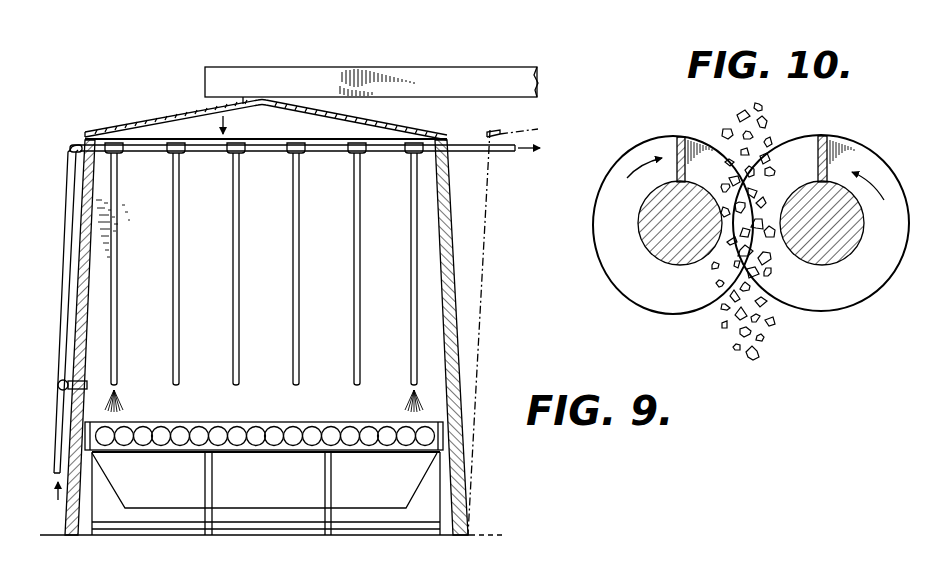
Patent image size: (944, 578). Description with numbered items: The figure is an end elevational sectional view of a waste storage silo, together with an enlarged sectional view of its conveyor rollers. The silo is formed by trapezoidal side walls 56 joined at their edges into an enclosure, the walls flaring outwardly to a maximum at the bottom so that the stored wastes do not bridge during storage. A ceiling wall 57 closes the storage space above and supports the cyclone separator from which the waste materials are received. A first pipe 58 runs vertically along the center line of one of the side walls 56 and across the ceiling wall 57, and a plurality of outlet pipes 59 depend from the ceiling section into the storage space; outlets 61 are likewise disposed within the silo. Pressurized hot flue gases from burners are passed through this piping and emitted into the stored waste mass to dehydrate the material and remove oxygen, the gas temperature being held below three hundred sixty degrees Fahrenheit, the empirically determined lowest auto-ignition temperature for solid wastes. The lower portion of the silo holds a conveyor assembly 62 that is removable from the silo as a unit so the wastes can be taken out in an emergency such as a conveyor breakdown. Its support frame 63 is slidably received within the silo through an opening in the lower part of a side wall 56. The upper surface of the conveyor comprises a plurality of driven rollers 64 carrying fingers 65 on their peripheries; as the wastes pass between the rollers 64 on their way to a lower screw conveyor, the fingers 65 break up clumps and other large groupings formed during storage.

In FIG. 9, the trapezoidal side wall 56 is at (85, 185).
In FIG. 9, the ceiling wall 57 is at (165, 122).
In FIG. 9, the first pipe 58 is at (68, 232).
In FIG. 9, the outlet pipe 59 is at (356, 238).
In FIG. 9, the outlet 61 is at (88, 383).
In FIG. 9, the conveyor assembly 62 is at (410, 478).
In FIG. 9, the support frame 63 is at (443, 465).
In FIG. 10, the driven roller 64 is at (690, 257).
In FIG. 10, the finger 65 is at (677, 137).